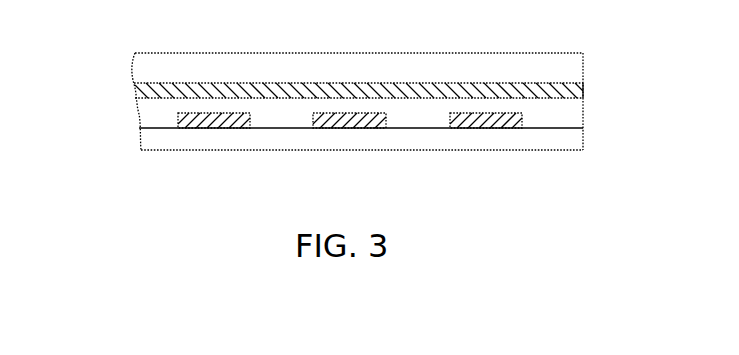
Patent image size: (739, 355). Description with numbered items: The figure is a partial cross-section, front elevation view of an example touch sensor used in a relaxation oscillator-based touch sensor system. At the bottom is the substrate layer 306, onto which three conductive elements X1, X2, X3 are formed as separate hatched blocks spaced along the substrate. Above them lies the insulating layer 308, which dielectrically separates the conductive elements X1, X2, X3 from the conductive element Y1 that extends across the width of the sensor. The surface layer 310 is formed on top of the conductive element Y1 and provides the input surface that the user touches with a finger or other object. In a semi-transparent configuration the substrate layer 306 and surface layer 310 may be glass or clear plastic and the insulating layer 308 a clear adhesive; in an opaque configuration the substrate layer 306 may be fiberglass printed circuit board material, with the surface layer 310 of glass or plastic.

The surface layer 310 is at (133, 79).
The insulating layer 308 is at (137, 118).
The substrate layer 306 is at (140, 143).
The conductive element Y1 is at (583, 87).
The conductive element X1 is at (473, 129).
The conductive element X2 is at (337, 129).
The conductive element X3 is at (203, 129).